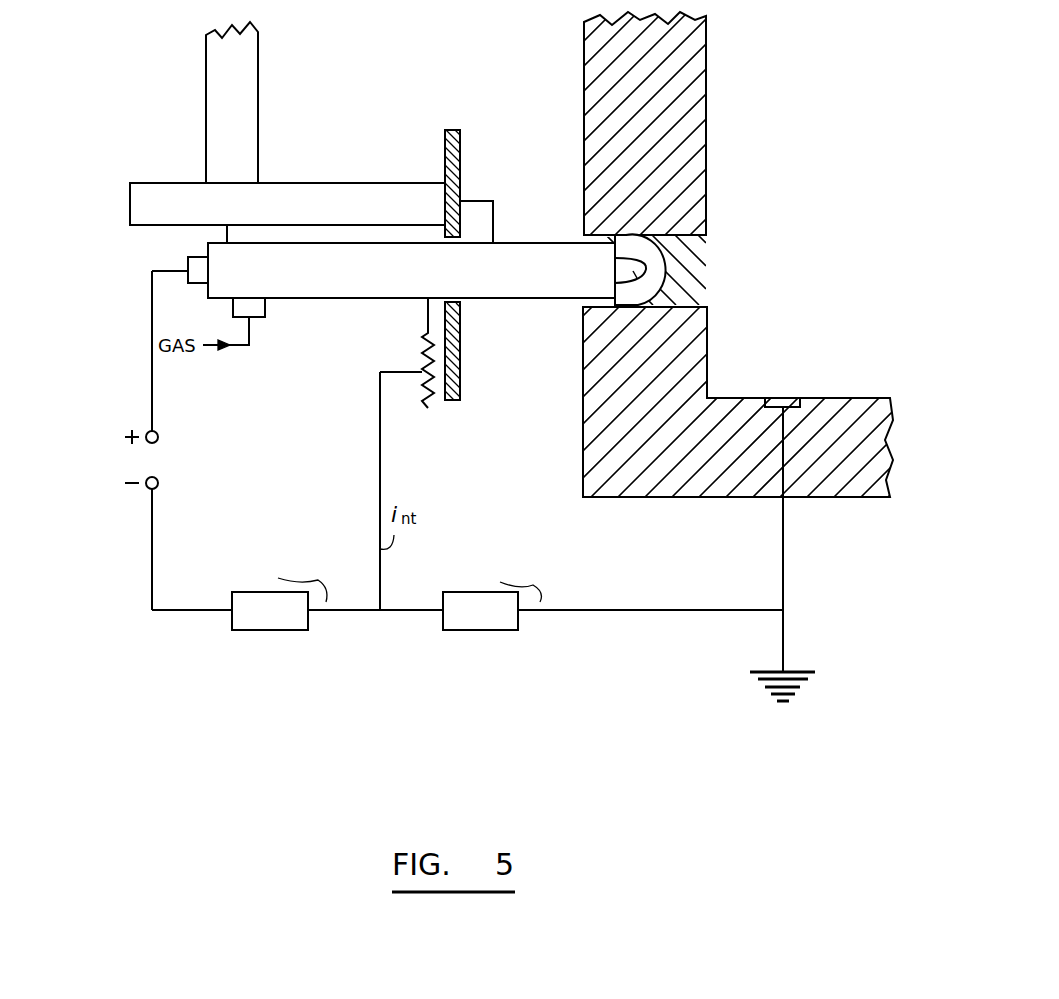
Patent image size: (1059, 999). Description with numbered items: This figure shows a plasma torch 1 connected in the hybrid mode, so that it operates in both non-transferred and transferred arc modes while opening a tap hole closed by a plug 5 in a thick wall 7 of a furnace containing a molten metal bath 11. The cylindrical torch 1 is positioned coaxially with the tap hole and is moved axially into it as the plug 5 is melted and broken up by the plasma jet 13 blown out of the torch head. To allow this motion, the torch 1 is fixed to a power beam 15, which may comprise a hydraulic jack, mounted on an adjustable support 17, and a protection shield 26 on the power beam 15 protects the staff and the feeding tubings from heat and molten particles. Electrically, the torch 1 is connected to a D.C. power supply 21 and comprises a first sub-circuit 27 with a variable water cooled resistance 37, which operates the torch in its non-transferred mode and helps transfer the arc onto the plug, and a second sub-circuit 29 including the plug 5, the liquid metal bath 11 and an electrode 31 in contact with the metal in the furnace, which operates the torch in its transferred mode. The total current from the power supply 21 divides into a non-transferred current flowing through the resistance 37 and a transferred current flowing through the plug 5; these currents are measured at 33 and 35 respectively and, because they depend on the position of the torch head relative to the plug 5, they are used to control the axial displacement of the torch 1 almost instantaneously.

The plasma torch 1 is at (498, 300).
The plug 5 is at (692, 276).
The thick wall 7 is at (688, 45).
The molten metal bath 11 is at (829, 332).
The plasma jet 13 is at (593, 308).
The power beam 15 is at (165, 192).
The support 17 is at (246, 72).
The D.C. power supply 21 is at (136, 459).
The protection shield 26 is at (458, 143).
The first sub-circuit 27 is at (278, 528).
The second sub-circuit 29 is at (534, 544).
The electrode 31 is at (783, 398).
The current measurement point for transferred current 33 is at (268, 630).
The current measurement point for non-transferred current 35 is at (480, 630).
The variable water cooled resistance 37 is at (428, 408).